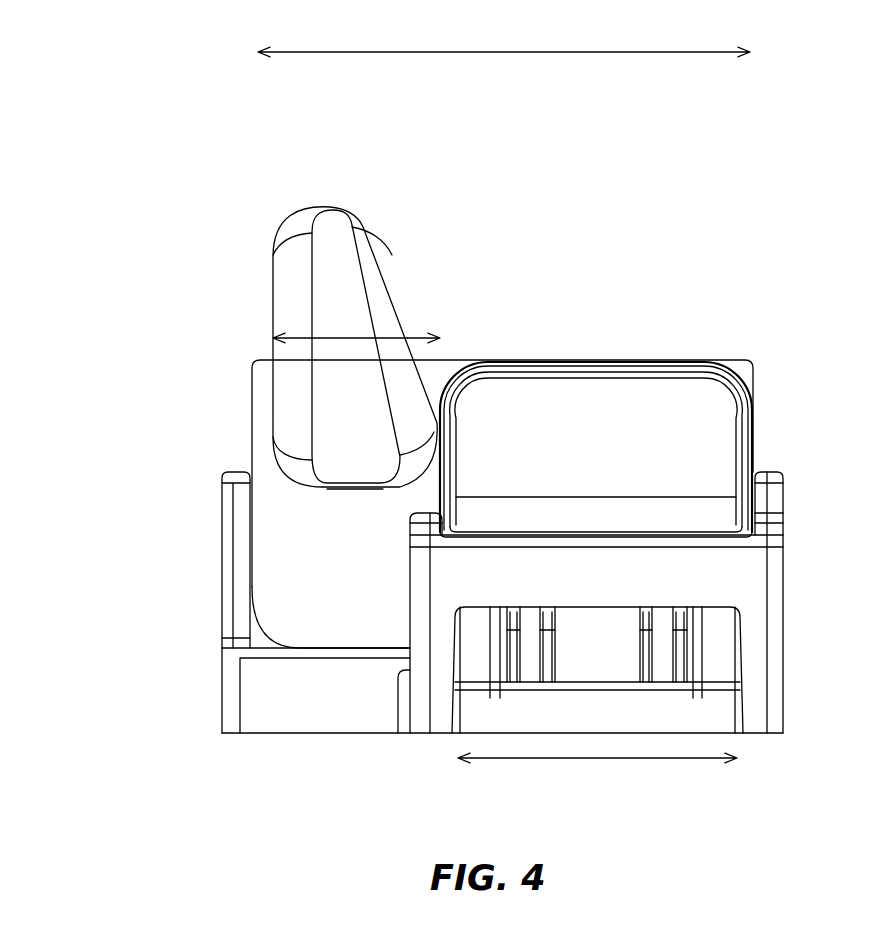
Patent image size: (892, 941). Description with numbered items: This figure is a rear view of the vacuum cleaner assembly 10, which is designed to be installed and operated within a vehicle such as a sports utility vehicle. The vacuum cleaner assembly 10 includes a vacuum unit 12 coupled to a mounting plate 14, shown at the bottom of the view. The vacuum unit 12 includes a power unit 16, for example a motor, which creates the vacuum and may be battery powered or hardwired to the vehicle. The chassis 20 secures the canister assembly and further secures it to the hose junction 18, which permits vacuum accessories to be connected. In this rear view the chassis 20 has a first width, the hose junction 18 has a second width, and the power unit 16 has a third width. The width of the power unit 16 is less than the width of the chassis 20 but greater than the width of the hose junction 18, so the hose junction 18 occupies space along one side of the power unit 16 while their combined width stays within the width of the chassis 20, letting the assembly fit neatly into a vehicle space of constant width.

The vacuum cleaner assembly 10 is at (465, 224).
The vacuum unit 12 is at (619, 414).
The mounting plate 14 is at (299, 694).
The power unit 16 is at (648, 455).
The hose junction 18 is at (320, 305).
The chassis 20 is at (340, 523).